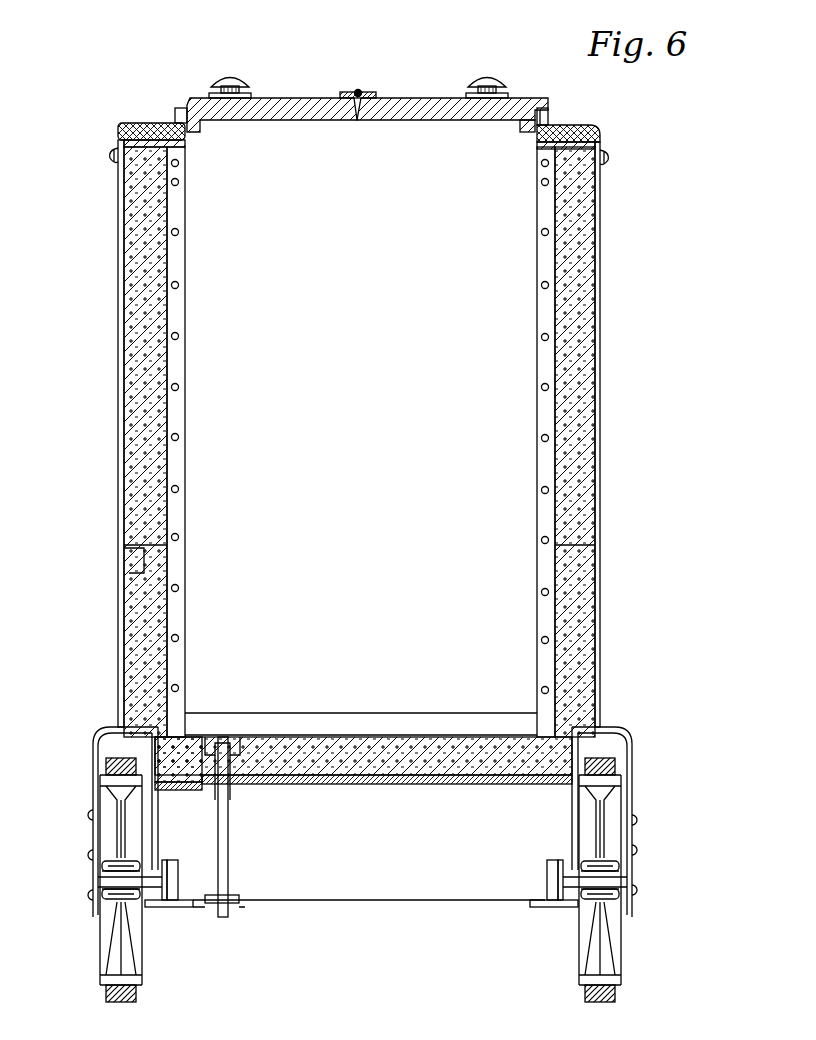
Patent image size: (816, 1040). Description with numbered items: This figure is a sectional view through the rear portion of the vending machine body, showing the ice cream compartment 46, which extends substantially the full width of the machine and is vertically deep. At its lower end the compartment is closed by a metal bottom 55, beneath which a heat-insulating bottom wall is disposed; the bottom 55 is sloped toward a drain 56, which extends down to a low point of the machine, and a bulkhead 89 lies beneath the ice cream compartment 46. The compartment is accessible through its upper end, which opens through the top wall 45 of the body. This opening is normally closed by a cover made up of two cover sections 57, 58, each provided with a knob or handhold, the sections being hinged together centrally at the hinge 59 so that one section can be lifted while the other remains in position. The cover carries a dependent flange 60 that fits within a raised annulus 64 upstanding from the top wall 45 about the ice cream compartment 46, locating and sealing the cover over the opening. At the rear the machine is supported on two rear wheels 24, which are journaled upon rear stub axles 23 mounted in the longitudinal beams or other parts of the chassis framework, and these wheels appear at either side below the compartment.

The rear stub axle 23 is at (98, 872).
The rear wheel 24 is at (142, 988).
The top wall 45 is at (595, 123).
The ice cream compartment 46 is at (502, 385).
The metal bottom 55 is at (385, 765).
The drain 56 is at (225, 912).
The cover section 57 is at (291, 97).
The cover section 58 is at (400, 120).
The hinge 59 is at (360, 92).
The dependent flange 60 is at (533, 127).
The raised annulus 64 is at (552, 115).
The bulkhead 89 is at (293, 783).